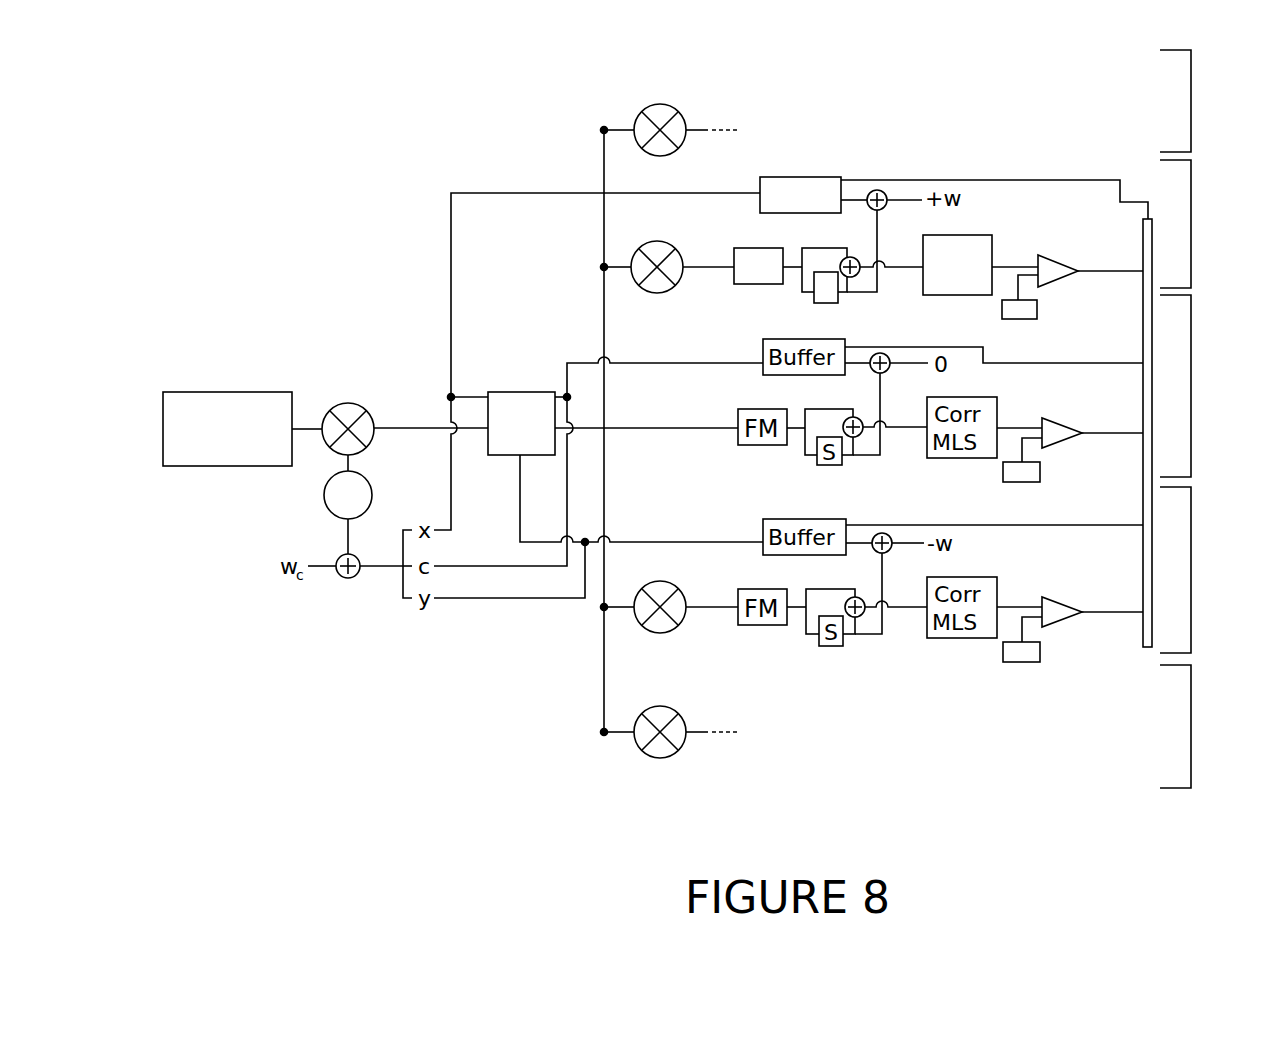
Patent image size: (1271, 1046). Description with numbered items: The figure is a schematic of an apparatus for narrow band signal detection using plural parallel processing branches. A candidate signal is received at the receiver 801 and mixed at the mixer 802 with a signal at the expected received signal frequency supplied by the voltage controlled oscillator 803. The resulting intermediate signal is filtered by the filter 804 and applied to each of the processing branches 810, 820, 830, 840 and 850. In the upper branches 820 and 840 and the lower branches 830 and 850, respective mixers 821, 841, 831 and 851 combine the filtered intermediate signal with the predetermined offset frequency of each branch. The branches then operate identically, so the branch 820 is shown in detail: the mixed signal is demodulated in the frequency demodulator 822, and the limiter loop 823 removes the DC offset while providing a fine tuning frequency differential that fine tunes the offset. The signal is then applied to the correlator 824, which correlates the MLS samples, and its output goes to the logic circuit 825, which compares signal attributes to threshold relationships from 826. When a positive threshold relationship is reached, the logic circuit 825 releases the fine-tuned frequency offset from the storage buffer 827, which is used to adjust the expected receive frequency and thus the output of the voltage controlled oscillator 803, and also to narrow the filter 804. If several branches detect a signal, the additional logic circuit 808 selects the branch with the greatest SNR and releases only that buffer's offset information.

The receiver 801 is at (227, 416).
The mixer 802 is at (350, 403).
The voltage controlled oscillator 803 is at (323, 493).
The filter 804 is at (521, 410).
The additional logic circuit 808 is at (1148, 647).
The processing branch 810 is at (1191, 388).
The processing branch 820 is at (1191, 220).
The mixer 821 is at (662, 242).
The frequency demodulator 822 is at (758, 254).
The limiter loop 823 is at (831, 263).
The correlator 824 is at (972, 235).
The logic circuit 825 is at (1046, 257).
The threshold relationships 826 is at (1037, 310).
The storage buffer 827 is at (800, 182).
The processing branch 830 is at (1191, 572).
The mixer 831 is at (665, 584).
The processing branch 840 is at (1191, 97).
The mixer 841 is at (663, 104).
The processing branch 850 is at (1191, 725).
The mixer 851 is at (665, 708).